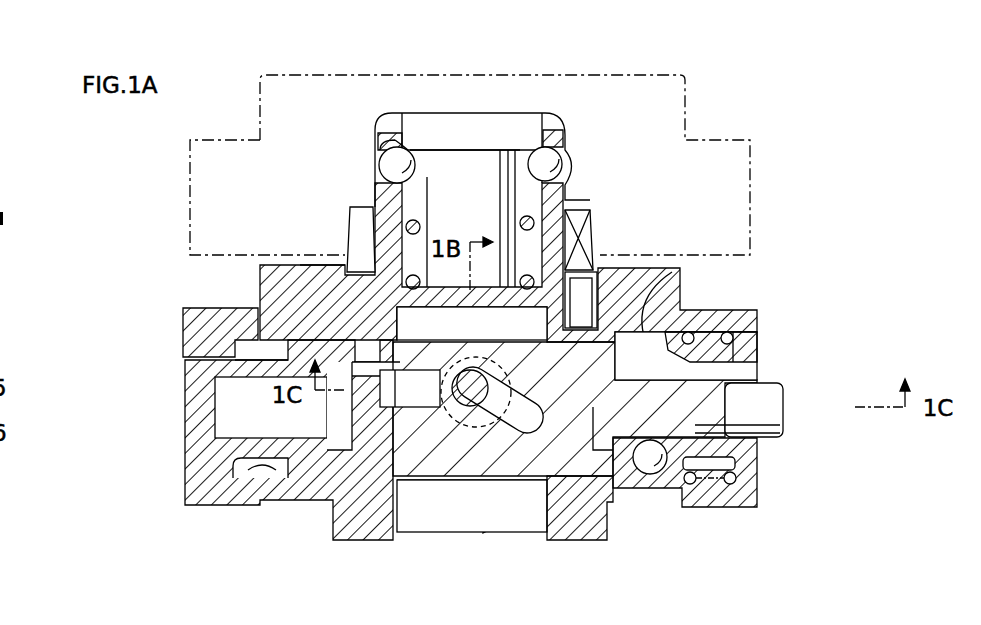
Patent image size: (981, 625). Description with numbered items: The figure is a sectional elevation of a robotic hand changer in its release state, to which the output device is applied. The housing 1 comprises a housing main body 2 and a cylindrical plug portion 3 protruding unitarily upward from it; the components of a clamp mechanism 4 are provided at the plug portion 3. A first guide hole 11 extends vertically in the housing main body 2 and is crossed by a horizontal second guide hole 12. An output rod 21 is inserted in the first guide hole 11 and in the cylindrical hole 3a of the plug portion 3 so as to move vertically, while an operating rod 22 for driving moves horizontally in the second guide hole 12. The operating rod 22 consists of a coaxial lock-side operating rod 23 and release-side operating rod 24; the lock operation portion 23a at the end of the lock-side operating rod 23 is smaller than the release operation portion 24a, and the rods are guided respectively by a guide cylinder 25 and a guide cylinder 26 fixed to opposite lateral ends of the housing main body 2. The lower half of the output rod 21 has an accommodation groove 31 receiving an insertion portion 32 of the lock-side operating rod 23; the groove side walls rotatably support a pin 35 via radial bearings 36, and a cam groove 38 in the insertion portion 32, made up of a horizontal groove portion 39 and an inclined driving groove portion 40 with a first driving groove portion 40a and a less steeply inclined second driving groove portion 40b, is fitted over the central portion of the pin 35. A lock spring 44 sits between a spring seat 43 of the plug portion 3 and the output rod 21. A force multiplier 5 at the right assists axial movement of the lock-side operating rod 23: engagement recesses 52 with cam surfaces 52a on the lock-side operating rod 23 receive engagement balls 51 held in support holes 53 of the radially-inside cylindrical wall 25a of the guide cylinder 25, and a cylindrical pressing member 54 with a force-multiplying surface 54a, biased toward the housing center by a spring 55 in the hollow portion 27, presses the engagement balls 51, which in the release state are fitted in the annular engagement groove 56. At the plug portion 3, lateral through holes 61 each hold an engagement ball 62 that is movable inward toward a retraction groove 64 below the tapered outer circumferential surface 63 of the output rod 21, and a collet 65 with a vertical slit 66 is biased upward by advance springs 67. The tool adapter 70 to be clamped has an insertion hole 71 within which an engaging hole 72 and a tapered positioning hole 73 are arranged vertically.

The housing 1 is at (258, 265).
The housing main body 2 is at (257, 292).
The plug portion 3 is at (572, 140).
The cylindrical hole 3a is at (390, 318).
The clamp mechanism 4 is at (600, 173).
The force multiplier 5 is at (642, 474).
The first guide hole 11 is at (405, 507).
The second guide hole 12 is at (195, 492).
The output rod 21 is at (325, 262).
The operating rod 22 is at (289, 440).
The lock-side operating rod 23 is at (775, 442).
The lock operation portion 23a is at (785, 402).
The release-side operating rod 24 is at (185, 437).
The release operation portion 24a is at (183, 405).
The guide cylinder 25 is at (757, 318).
The radially-inside cylindrical wall 25a is at (716, 478).
The guide cylinder 26 is at (182, 330).
The hollow portion 27 is at (722, 487).
The accommodation groove 31 is at (285, 362).
The insertion portion 32 is at (513, 470).
The pin 35 is at (352, 527).
The radial bearings 36 is at (330, 497).
The cam groove 38 is at (345, 395).
The horizontal groove portion 39 is at (258, 478).
The driving groove portion 40 is at (552, 398).
The first driving groove portion 40a is at (492, 372).
The second driving groove portion 40b is at (503, 422).
The spring seat 43 is at (421, 207).
The lock spring 44 is at (421, 227).
The engagement balls 51 is at (652, 466).
The engagement recesses 52 is at (783, 430).
The cam surface 52a is at (652, 483).
The support holes 53 is at (606, 507).
The pressing member 54 is at (705, 347).
The force-multiplying surface 54a is at (682, 275).
The spring 55 is at (740, 345).
The engagement groove 56 is at (742, 378).
The through holes 61 is at (388, 160).
The engagement ball 62 is at (388, 168).
The tapered outer circumferential surface 63 is at (395, 136).
The retraction groove 64 is at (410, 150).
The collet 65 is at (593, 235).
The slit 66 is at (355, 237).
The advance springs 67 is at (600, 258).
The tool adapter 70 is at (687, 88).
The insertion hole 71 is at (587, 248).
The engaging hole 72 is at (582, 148).
The tapered positioning hole 73 is at (590, 201).